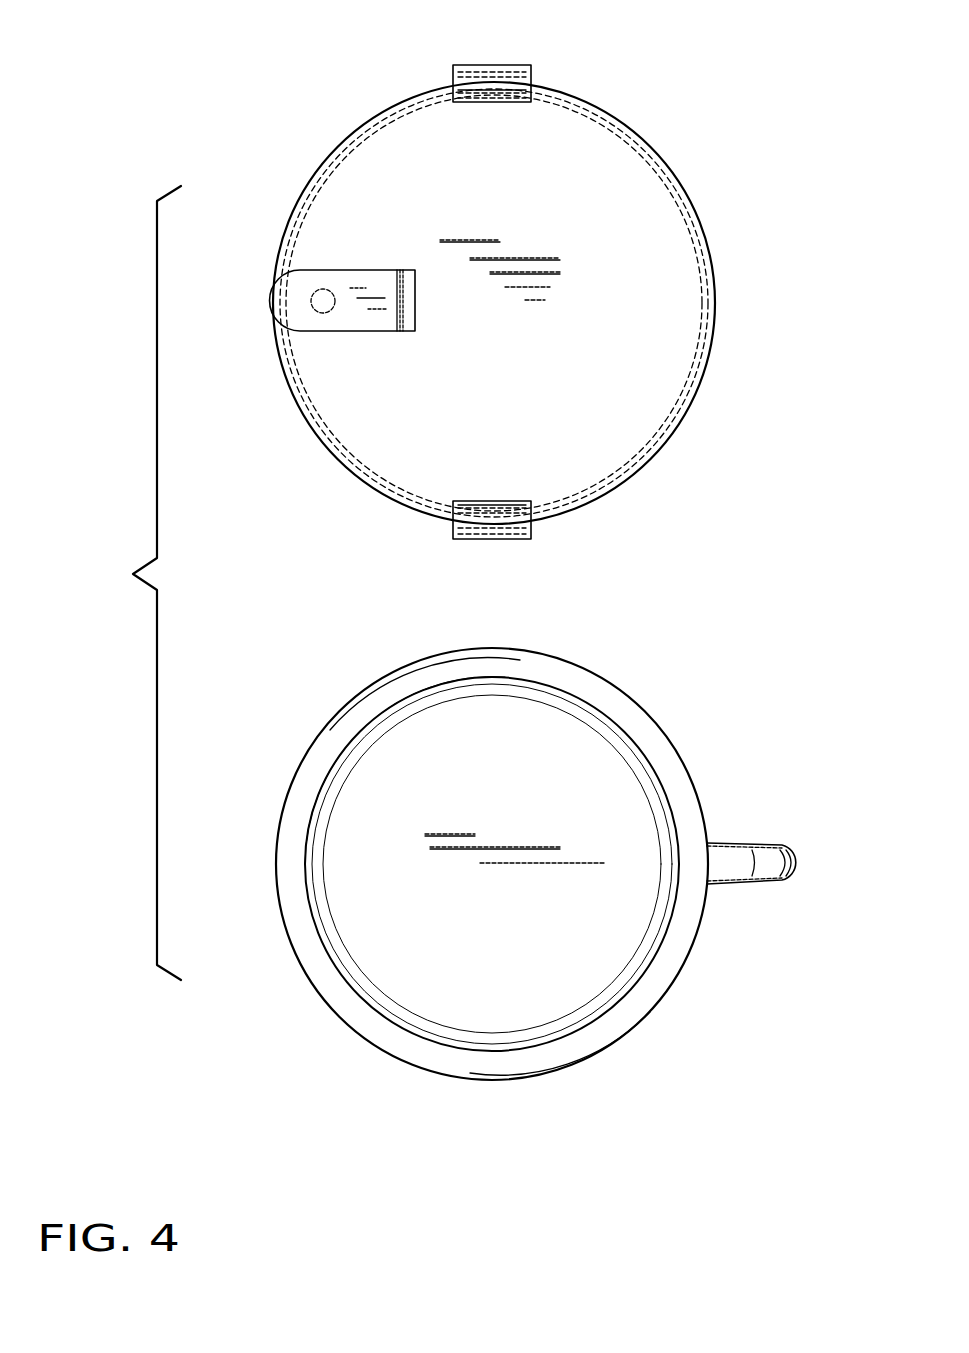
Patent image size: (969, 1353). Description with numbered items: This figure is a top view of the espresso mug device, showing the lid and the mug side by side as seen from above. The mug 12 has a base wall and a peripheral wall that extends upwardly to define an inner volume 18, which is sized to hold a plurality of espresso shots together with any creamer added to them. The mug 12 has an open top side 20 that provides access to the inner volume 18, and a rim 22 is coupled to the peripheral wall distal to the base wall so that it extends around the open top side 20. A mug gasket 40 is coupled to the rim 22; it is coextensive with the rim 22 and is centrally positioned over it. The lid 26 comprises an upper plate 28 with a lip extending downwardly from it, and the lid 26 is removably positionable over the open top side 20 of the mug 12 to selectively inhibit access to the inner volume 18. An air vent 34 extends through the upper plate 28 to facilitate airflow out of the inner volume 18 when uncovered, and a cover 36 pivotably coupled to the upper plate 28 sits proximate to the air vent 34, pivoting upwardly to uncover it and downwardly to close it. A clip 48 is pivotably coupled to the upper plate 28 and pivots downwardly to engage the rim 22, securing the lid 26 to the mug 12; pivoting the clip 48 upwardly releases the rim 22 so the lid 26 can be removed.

The mug 12 is at (618, 1040).
The inner volume 18 is at (487, 988).
The open top side 20 is at (385, 1017).
The rim 22 is at (690, 780).
The lid 26 is at (573, 90).
The upper plate 28 is at (627, 185).
The air vent 34 is at (323, 309).
The cover 36 is at (377, 282).
The mug gasket 40 is at (640, 737).
The clip 48 is at (497, 78).